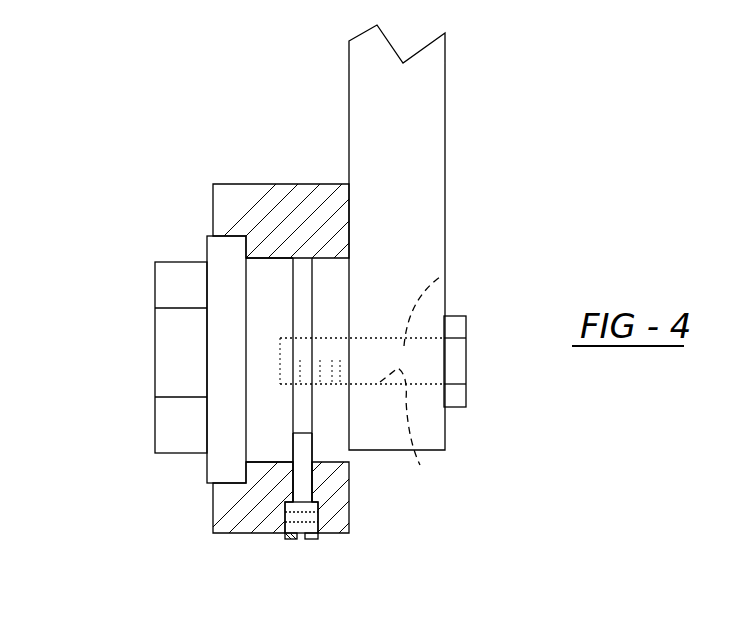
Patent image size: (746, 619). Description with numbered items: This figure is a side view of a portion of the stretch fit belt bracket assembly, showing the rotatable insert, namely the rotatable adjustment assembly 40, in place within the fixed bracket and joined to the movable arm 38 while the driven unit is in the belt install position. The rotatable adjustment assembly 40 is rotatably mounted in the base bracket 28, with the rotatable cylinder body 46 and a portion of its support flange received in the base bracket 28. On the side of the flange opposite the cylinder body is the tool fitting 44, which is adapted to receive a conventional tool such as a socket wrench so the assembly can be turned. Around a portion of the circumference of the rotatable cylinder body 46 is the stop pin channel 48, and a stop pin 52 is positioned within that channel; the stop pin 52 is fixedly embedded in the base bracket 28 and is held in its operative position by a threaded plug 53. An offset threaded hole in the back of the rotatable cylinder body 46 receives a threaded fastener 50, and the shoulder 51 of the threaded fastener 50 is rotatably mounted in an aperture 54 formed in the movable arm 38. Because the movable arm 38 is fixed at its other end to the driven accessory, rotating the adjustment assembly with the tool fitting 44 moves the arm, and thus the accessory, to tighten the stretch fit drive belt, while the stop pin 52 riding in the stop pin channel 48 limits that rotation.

The base bracket 28 is at (233, 200).
The movable arm 38 is at (407, 188).
The rotatable adjustment assembly 40 is at (222, 460).
The tool fitting 44 is at (175, 350).
The rotatable cylinder body 46 is at (265, 305).
The stop pin channel 48 is at (296, 300).
The threaded fastener 50 is at (455, 363).
The shoulder 51 is at (440, 277).
The stop pin 52 is at (303, 477).
The threaded plug 53 is at (292, 548).
The aperture 54 is at (420, 465).